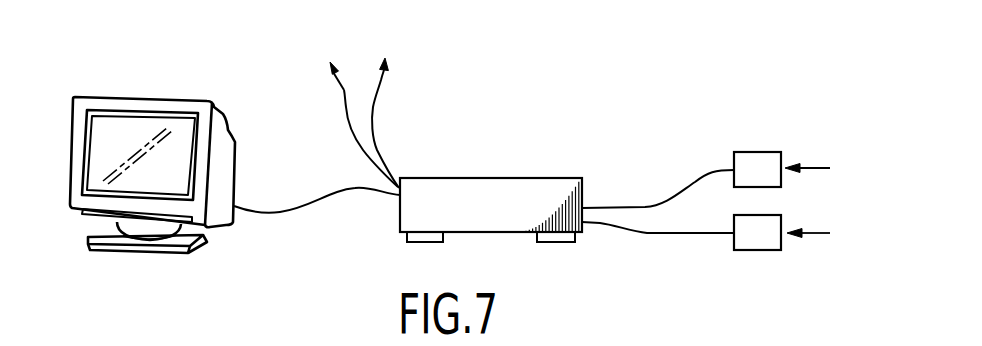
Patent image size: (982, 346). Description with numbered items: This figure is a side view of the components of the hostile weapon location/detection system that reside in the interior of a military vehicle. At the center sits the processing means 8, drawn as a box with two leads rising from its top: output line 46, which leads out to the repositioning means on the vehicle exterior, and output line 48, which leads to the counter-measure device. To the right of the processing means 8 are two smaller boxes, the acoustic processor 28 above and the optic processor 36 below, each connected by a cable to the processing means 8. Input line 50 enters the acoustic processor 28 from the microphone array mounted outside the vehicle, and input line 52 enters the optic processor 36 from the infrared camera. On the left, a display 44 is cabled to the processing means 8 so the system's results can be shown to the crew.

The processing means 8 is at (490, 178).
The acoustic processor 28 is at (753, 152).
The optic processor 36 is at (753, 250).
The display 44 is at (143, 97).
The output line 46 is at (346, 110).
The output line 48 is at (380, 102).
The input line 50 is at (815, 167).
The input line 52 is at (803, 236).